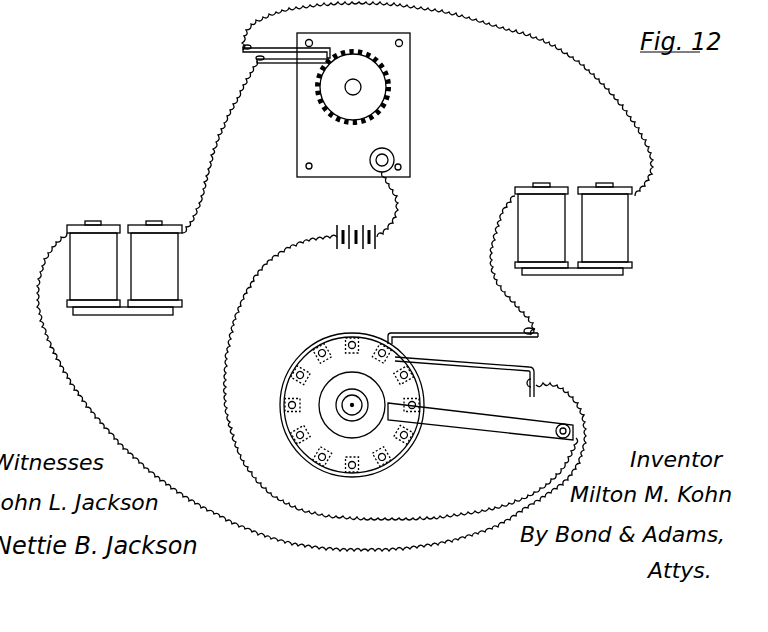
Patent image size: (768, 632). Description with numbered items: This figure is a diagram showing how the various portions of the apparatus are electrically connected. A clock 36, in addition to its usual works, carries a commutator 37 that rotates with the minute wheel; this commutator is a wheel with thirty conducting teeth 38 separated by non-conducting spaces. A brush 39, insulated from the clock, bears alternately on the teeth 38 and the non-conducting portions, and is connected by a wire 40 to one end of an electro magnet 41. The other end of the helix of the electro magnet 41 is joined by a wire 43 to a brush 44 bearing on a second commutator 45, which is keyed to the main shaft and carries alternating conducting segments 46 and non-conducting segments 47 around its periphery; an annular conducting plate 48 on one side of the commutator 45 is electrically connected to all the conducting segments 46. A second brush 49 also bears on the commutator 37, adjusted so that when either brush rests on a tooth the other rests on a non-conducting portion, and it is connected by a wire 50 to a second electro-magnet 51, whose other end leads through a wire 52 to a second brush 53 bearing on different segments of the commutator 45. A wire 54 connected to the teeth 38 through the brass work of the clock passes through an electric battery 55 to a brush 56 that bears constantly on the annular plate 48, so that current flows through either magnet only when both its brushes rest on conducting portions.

The clock 36 is at (353, 105).
The commutator 37 is at (353, 87).
The teeth 38 is at (392, 63).
The brush 39 is at (262, 50).
The wire 40 is at (530, 33).
The electro magnet 41 is at (625, 230).
The wire 43 is at (490, 258).
The brush 44 is at (442, 333).
The commutator 45 is at (326, 393).
The conducting segments 46 is at (350, 334).
The non-conducting segments 47 is at (373, 340).
The annular conducting plate 48 is at (352, 398).
The second brush 49 is at (276, 67).
The wire 50 is at (218, 148).
The second electro-magnet 51 is at (165, 270).
The wire 52 is at (97, 418).
The second brush 53 is at (478, 366).
The wire 54 is at (401, 213).
The electric battery 55 is at (351, 248).
The brush 56 is at (477, 424).